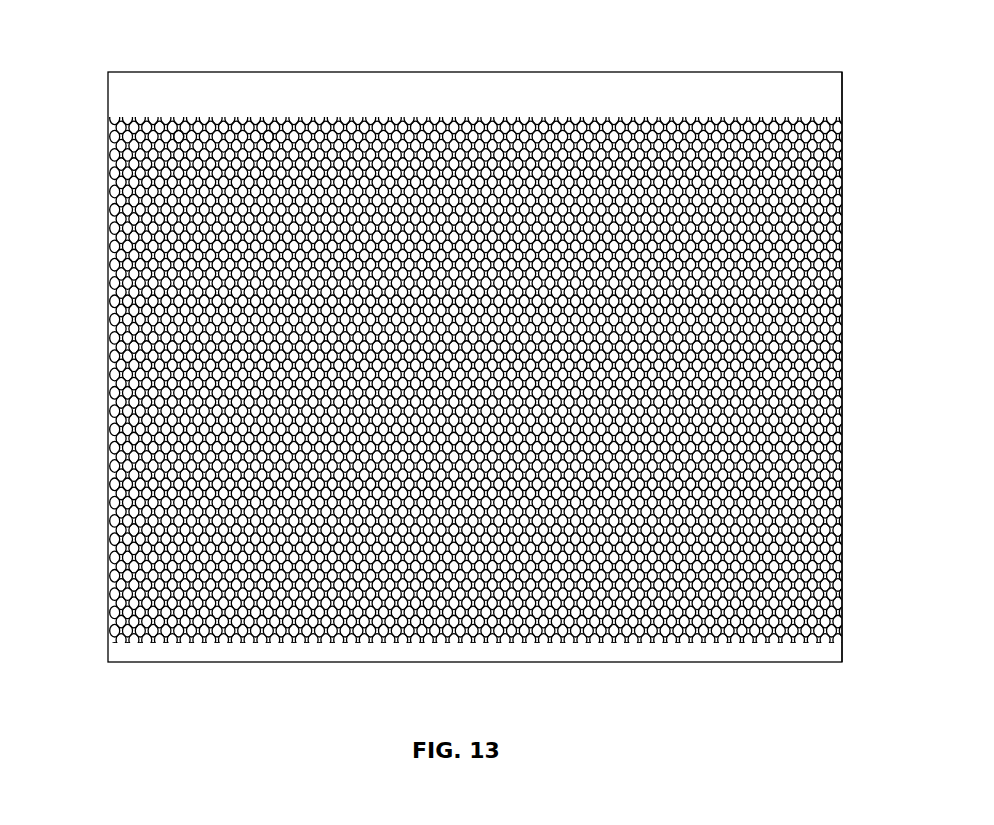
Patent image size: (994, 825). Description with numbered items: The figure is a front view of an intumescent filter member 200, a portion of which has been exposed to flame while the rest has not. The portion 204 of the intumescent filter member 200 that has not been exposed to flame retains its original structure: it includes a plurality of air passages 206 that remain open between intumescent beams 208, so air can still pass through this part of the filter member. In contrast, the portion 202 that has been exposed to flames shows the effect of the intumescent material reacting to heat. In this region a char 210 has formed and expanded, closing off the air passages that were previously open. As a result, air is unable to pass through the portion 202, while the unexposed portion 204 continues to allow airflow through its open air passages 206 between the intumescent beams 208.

The intumescent filter member 200 is at (88, 163).
The portion exposed to flame 202 is at (842, 63).
The portion not exposed to flame 204 is at (430, 673).
The air passages 206 is at (181, 138).
The intumescent beams 208 is at (271, 132).
The char 210 is at (846, 218).